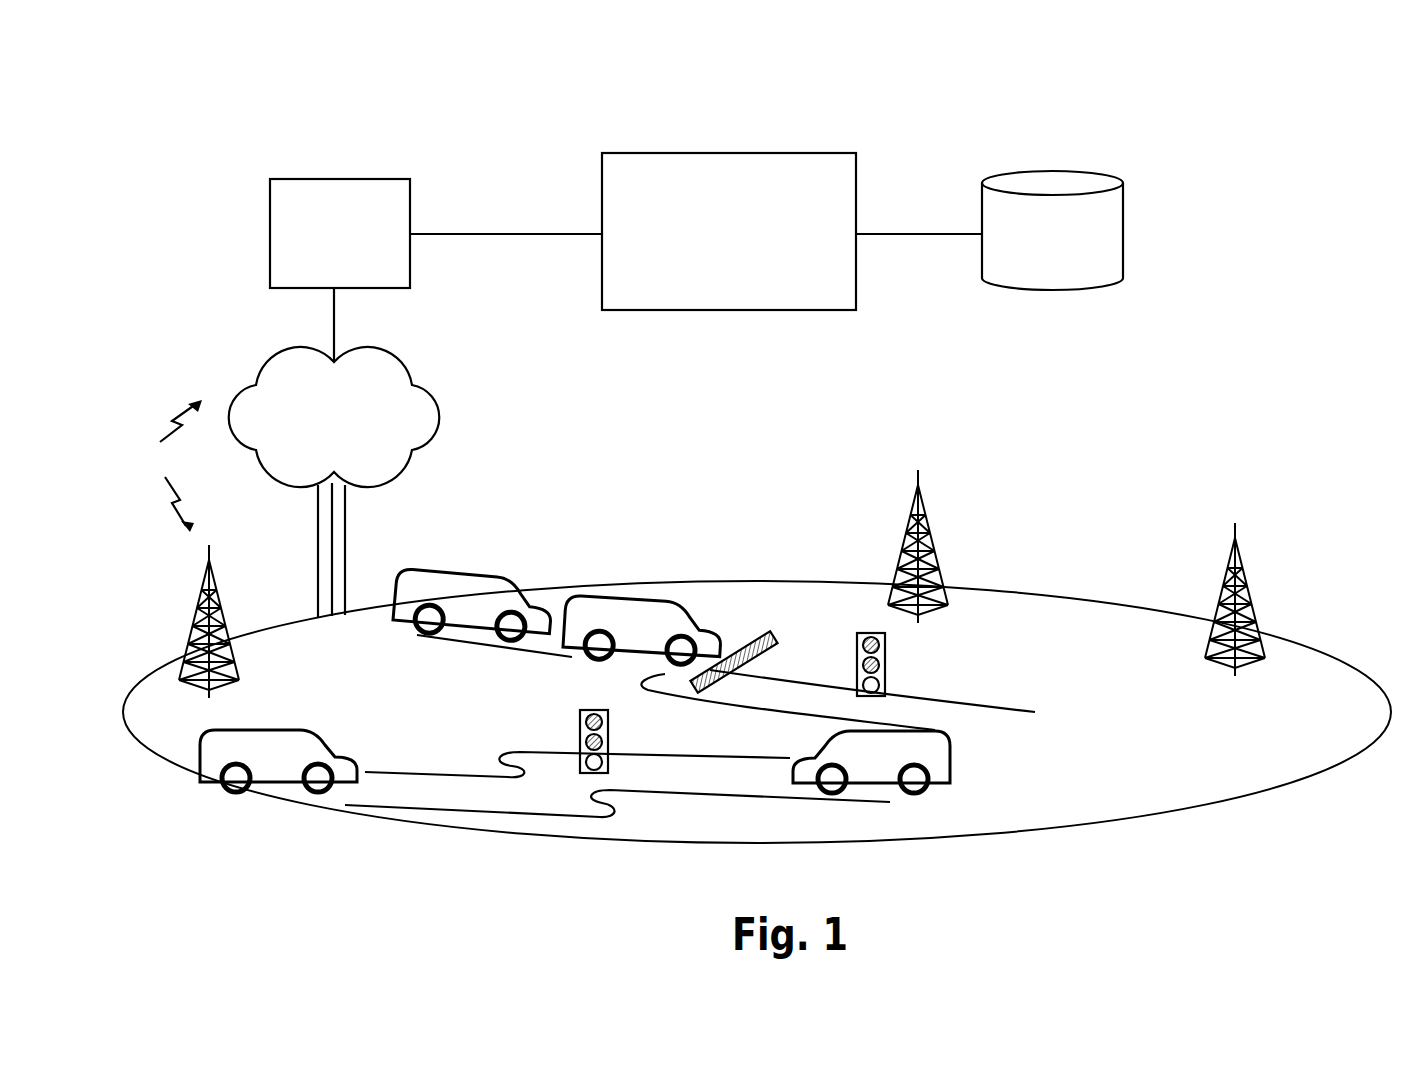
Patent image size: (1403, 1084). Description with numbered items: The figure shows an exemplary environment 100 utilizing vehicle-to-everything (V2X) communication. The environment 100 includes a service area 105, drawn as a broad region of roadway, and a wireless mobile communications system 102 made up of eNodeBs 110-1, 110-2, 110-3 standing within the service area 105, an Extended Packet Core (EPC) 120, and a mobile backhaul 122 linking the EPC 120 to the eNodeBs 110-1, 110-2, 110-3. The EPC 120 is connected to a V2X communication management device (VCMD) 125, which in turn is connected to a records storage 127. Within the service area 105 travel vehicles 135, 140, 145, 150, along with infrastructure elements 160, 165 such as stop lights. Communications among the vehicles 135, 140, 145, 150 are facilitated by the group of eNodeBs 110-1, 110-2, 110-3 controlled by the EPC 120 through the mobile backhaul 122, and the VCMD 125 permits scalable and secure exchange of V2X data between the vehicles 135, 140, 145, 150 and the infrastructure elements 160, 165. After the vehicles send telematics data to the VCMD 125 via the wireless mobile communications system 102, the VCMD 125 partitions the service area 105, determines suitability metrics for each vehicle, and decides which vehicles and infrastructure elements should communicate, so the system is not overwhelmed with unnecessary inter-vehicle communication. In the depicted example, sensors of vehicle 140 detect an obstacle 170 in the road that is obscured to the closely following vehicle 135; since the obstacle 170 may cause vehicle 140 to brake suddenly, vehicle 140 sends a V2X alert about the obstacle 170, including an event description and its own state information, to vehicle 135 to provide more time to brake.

The environment 100 is at (173, 62).
The wireless mobile communications system 102 is at (163, 466).
The service area 105 is at (718, 843).
The eNodeB 110-1 is at (898, 545).
The eNodeB 110-2 is at (205, 565).
The eNodeB 110-3 is at (1255, 615).
The Extended Packet Core 120 is at (410, 198).
The mobile backhaul 122 is at (420, 380).
The V2X communication management device 125 is at (784, 153).
The records storage 127 is at (1123, 250).
The vehicle 135 is at (455, 572).
The vehicle 140 is at (636, 598).
The vehicle 145 is at (958, 767).
The vehicle 150 is at (340, 757).
The infrastructure element 160 is at (893, 663).
The infrastructure element 165 is at (577, 722).
The obstacle 170 is at (773, 640).